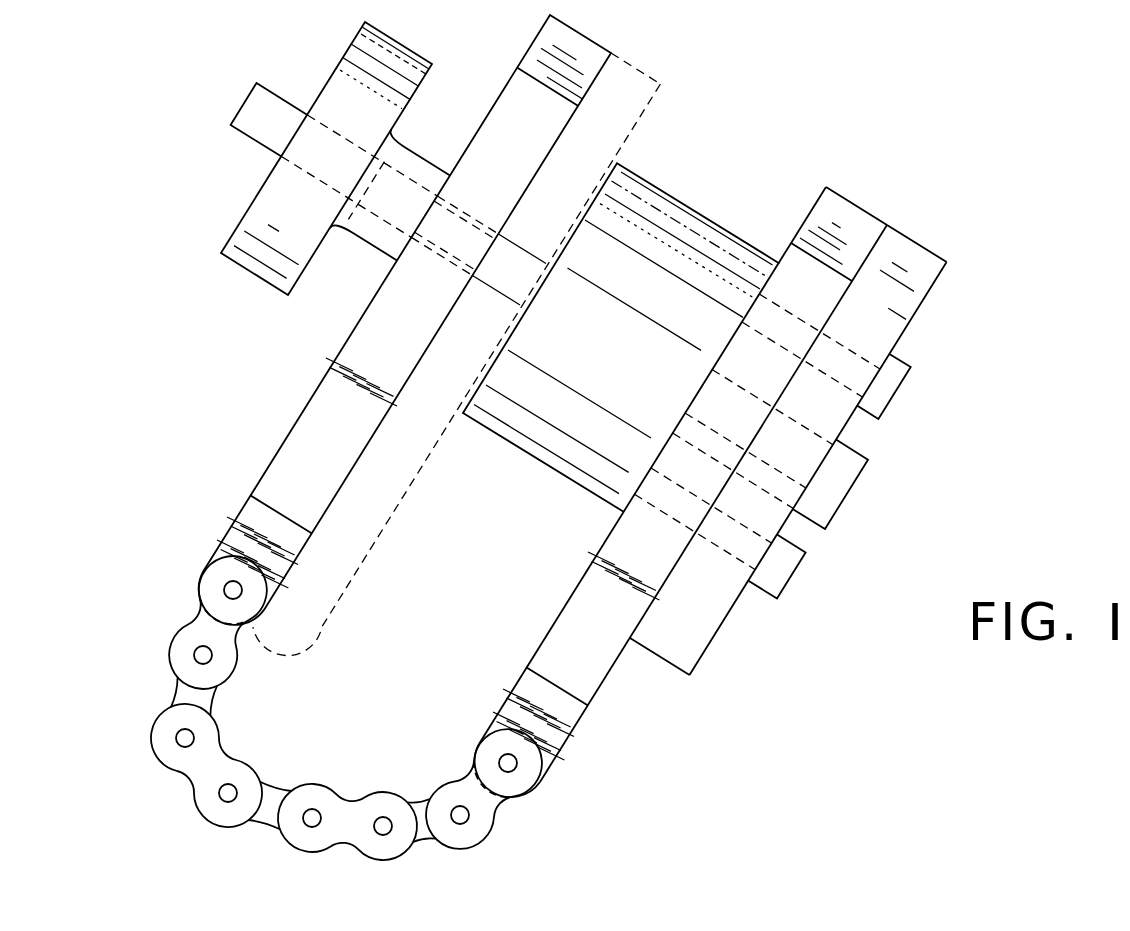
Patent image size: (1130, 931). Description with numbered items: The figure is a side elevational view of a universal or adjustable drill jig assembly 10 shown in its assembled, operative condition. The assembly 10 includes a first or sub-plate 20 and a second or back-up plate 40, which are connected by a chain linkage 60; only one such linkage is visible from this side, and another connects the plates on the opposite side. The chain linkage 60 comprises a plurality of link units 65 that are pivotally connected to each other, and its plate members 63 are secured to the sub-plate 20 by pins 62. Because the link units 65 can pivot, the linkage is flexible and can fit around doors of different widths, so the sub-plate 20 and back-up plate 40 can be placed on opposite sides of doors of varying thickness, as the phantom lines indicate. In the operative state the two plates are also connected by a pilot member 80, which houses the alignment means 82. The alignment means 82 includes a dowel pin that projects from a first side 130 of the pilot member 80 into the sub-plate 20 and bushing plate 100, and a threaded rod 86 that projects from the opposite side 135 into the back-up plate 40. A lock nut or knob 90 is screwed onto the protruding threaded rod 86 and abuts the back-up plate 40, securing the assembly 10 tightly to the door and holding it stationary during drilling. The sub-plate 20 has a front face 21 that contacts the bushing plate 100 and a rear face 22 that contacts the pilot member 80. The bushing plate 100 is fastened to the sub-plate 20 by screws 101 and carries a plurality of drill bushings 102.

The jig assembly 10 is at (547, 430).
The sub-plate 20 is at (690, 476).
The front face 21 is at (607, 676).
The rear face 22 is at (574, 592).
The back-up plate 40 is at (598, 43).
The chain linkage 60 is at (330, 708).
The pin 62 is at (197, 655).
The plate member 63 is at (196, 611).
The link unit 65 is at (198, 803).
The pilot member 80 is at (700, 238).
The alignment means 82 is at (309, 110).
The threaded rod 86 is at (258, 132).
The lock nut or knob 90 is at (262, 258).
The bushing plate 100 is at (716, 590).
The screw 101 is at (905, 390).
The drill bushing 102 is at (830, 489).
The first side 130 is at (786, 278).
The opposite side 135 is at (577, 222).